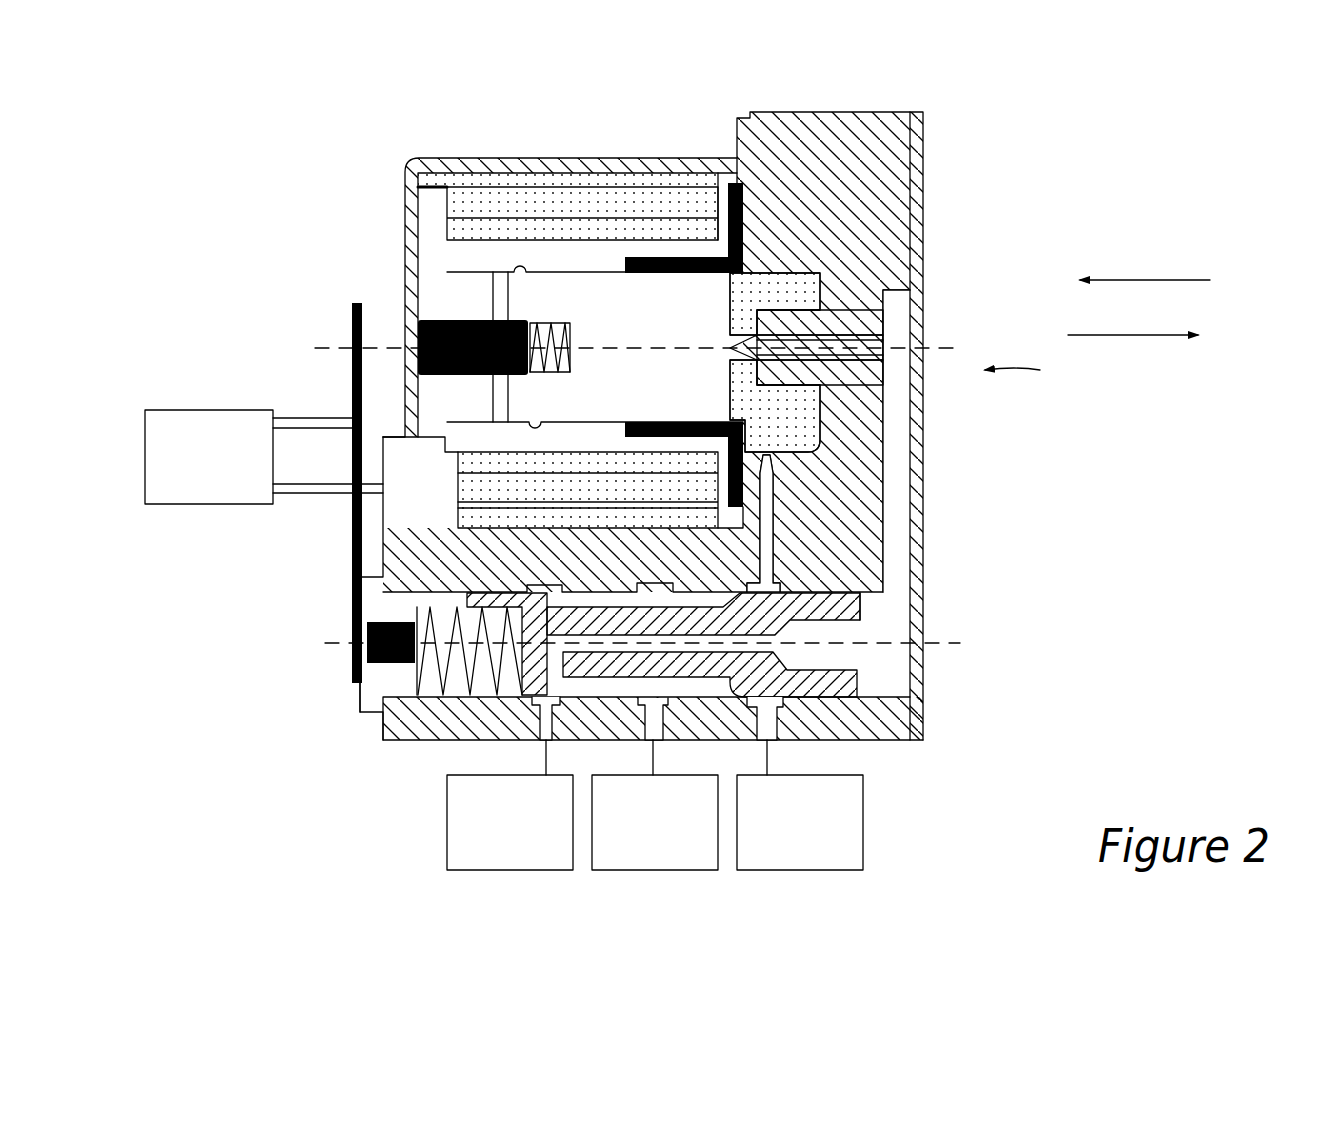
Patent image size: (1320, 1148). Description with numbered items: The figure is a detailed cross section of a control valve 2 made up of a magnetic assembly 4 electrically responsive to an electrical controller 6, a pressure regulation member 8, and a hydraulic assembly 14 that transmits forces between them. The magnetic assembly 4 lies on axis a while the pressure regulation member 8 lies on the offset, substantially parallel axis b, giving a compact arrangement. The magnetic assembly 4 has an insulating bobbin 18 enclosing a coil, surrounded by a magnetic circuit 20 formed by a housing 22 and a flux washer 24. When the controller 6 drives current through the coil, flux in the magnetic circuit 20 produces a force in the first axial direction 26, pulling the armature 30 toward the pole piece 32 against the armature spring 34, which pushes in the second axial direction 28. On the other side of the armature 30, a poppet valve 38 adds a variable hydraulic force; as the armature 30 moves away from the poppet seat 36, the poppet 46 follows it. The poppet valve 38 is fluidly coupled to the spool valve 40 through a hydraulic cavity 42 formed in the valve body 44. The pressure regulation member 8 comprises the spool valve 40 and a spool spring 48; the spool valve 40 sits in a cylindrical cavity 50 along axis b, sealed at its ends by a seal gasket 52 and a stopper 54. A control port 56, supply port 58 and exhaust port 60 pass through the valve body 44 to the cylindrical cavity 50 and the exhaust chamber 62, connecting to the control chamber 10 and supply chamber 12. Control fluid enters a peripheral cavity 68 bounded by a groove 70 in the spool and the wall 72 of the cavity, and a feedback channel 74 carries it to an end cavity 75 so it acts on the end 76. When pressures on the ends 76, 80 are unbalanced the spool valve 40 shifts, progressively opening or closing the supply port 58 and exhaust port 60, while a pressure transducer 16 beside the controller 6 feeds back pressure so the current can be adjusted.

The control valve 2 is at (677, 507).
The magnetic assembly 4 is at (528, 436).
The electrical controller 6 is at (200, 413).
The pressure regulation member 8 is at (578, 541).
The control chamber 10 is at (700, 860).
The supply chamber 12 is at (557, 860).
The hydraulic assembly 14 is at (1029, 369).
The pressure transducer 16 is at (352, 657).
The bobbin 18 is at (533, 257).
The magnetic circuit 20 is at (684, 165).
The housing 22 is at (608, 170).
The flux washer 24 is at (740, 190).
The first axial direction 26 is at (1145, 265).
The second axial direction 28 is at (1133, 321).
The armature 30 is at (715, 323).
The pole piece 32 is at (433, 293).
The armature spring 34 is at (543, 327).
The poppet seat 36 is at (747, 313).
The poppet valve 38 is at (883, 382).
The spool valve 40 is at (688, 732).
The hydraulic cavity 42 is at (897, 490).
The valve body 44 is at (893, 285).
The poppet 46 is at (883, 410).
The spool spring 48 is at (443, 683).
The cylindrical cavity 50 is at (880, 657).
The seal gasket 52 is at (917, 613).
The stopper 54 is at (383, 685).
The control port 56 is at (690, 735).
The supply port 58 is at (543, 728).
The exhaust port 60 is at (773, 727).
The exhaust chamber 62 is at (847, 860).
The peripheral cavity 68 is at (643, 690).
The groove 70 is at (617, 677).
The wall 72 is at (923, 737).
The feedback channel 74 is at (383, 560).
The end cavity 75 is at (395, 725).
The end 76 is at (417, 608).
The end 80 is at (860, 603).
The axis a is at (956, 348).
The axis b is at (954, 643).